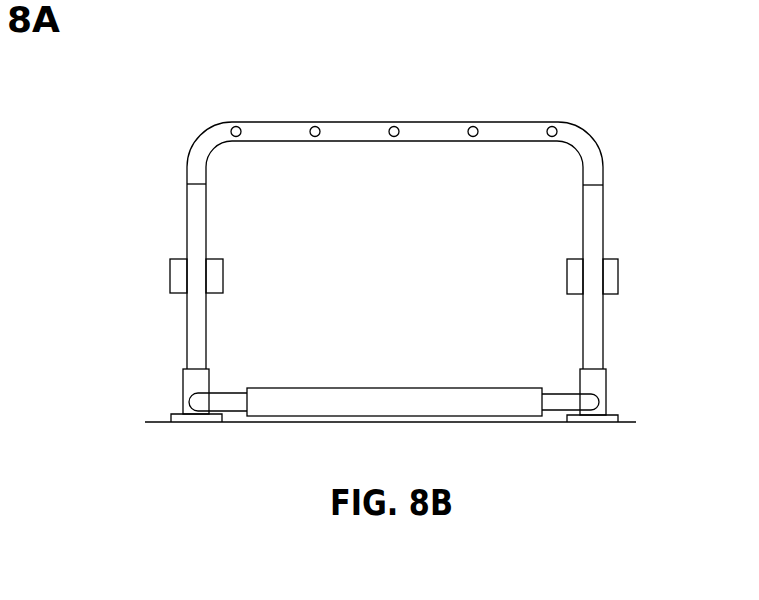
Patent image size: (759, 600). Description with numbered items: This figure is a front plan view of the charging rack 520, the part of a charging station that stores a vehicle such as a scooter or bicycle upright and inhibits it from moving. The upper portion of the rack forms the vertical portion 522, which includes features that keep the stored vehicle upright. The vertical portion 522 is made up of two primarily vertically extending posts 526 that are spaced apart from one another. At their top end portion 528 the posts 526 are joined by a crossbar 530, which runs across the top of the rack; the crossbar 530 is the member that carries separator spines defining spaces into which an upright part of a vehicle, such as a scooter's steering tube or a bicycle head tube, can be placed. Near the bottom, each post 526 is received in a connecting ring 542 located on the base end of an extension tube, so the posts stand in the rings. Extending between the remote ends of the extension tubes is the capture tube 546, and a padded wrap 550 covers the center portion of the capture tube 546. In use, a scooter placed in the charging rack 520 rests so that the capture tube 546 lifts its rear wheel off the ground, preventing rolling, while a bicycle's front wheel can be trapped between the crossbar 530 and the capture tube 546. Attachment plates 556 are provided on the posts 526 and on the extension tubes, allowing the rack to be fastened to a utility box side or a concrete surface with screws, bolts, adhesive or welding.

The charging rack 520 is at (343, 95).
The vertical portion 522 is at (609, 210).
The posts 526 is at (187, 333).
The top end portion 528 is at (183, 152).
The crossbar 530 is at (432, 122).
The connecting ring 542 is at (594, 382).
The capture tube 546 is at (233, 401).
The padded wrap 550 is at (447, 405).
The attachment plates 556 is at (223, 274).